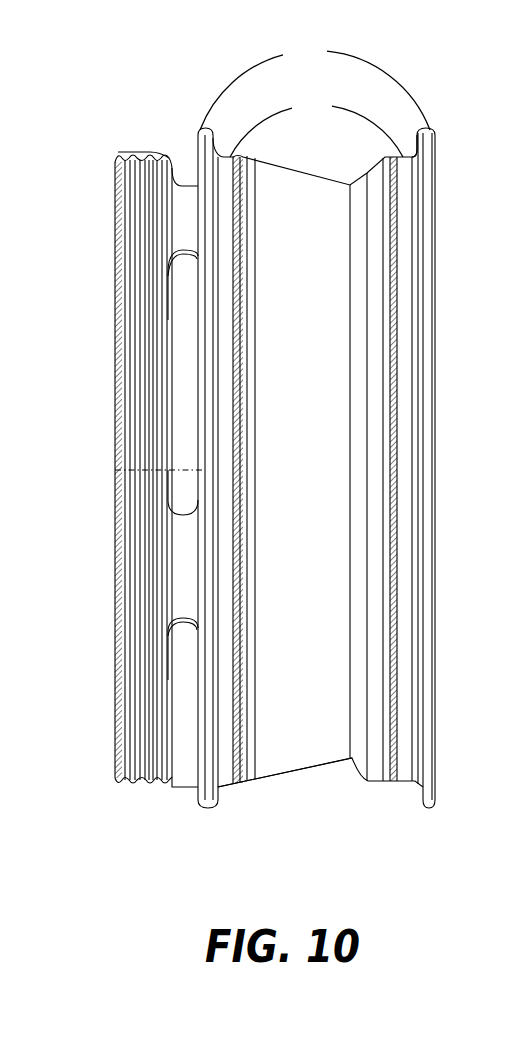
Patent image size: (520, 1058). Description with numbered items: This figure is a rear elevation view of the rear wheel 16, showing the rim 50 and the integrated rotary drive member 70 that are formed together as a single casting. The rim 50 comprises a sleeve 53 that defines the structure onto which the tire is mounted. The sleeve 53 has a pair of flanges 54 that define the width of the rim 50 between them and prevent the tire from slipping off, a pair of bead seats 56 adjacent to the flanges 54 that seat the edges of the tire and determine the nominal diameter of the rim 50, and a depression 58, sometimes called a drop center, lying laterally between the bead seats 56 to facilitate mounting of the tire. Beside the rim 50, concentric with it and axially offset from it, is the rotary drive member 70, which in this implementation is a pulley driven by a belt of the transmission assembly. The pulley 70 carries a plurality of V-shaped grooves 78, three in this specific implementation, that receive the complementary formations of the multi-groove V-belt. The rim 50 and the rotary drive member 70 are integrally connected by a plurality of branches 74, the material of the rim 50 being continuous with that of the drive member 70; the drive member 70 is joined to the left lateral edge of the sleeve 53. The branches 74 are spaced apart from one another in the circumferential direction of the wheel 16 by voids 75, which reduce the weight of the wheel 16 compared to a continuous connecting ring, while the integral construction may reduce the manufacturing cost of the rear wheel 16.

The rear wheel 16 is at (452, 102).
The rim 50 is at (397, 305).
The sleeve 53 is at (307, 610).
The flanges 54 is at (315, 86).
The bead seats 56 is at (316, 129).
The depression 58 is at (349, 766).
The rotary drive member 70 is at (123, 172).
The branches 74 is at (182, 223).
The voids 75 is at (185, 321).
The V-shaped grooves 78 is at (163, 155).